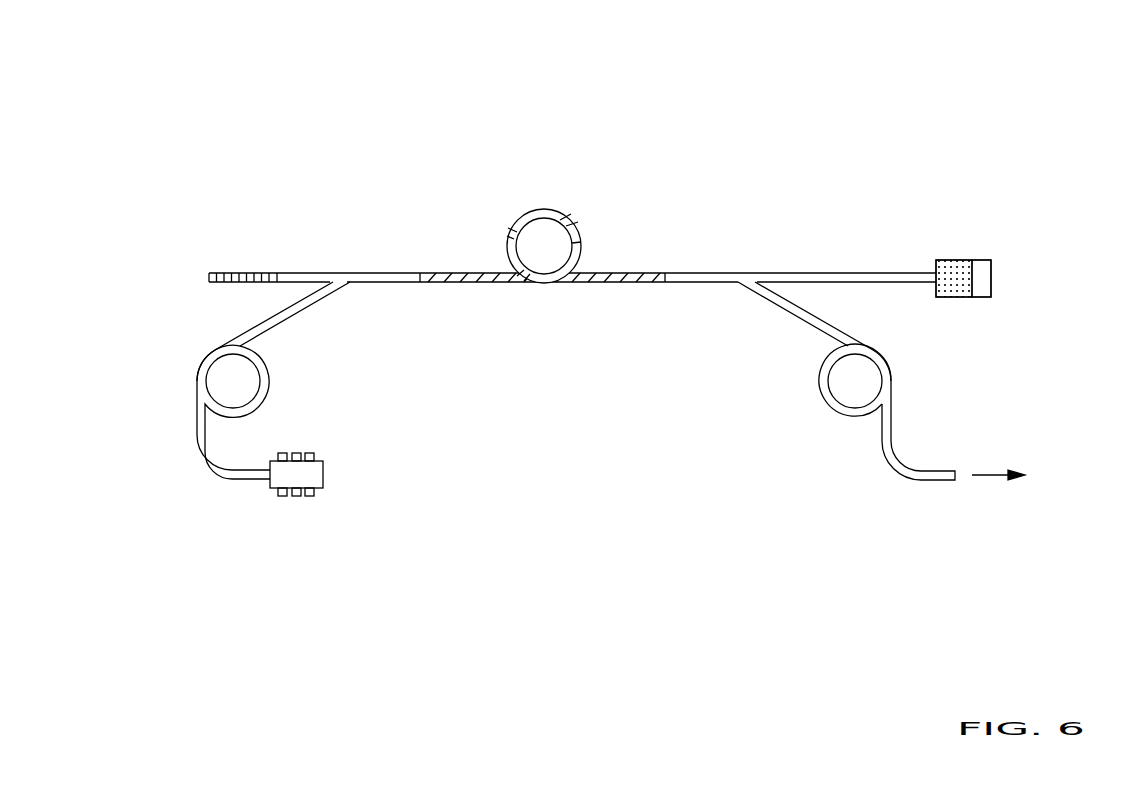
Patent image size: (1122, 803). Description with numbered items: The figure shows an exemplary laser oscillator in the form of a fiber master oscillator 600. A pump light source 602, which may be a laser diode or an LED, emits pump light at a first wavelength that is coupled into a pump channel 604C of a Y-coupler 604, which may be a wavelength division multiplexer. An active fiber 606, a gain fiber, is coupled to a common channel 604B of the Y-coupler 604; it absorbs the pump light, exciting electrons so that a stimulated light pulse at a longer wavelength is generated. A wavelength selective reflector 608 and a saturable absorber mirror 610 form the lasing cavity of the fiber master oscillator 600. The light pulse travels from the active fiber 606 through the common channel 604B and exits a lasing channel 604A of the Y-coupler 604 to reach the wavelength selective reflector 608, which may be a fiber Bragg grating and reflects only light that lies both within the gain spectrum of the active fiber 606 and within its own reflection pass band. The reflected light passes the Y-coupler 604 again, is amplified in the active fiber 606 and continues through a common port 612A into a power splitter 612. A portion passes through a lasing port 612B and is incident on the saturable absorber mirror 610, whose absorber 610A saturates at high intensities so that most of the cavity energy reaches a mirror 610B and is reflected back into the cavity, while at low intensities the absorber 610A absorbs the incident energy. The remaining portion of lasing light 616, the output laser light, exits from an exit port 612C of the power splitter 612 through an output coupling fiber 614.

The fiber master oscillator 600 is at (325, 106).
The pump light source 602 is at (323, 490).
The Y-coupler 604 is at (323, 272).
The lasing channel 604A is at (270, 272).
The common channel 604B is at (420, 272).
The pump channel 604C is at (281, 313).
The active fiber 606 is at (571, 212).
The wavelength selective reflector 608 is at (233, 272).
The saturable absorber mirror 610 is at (966, 260).
The absorber 610A is at (950, 297).
The mirror 610B is at (983, 297).
The power splitter 612 is at (721, 272).
The common port 612A is at (664, 272).
The lasing port 612B is at (810, 272).
The exit port 612C is at (803, 314).
The output coupling fiber 614 is at (831, 414).
The lasing light 616 is at (990, 474).